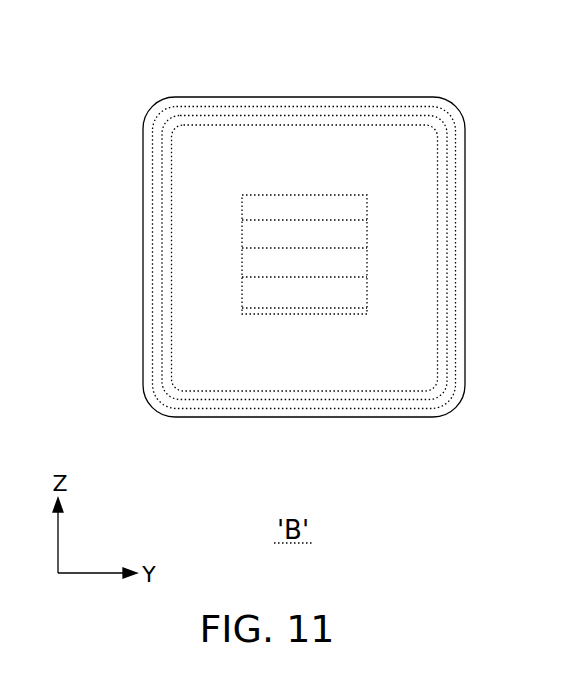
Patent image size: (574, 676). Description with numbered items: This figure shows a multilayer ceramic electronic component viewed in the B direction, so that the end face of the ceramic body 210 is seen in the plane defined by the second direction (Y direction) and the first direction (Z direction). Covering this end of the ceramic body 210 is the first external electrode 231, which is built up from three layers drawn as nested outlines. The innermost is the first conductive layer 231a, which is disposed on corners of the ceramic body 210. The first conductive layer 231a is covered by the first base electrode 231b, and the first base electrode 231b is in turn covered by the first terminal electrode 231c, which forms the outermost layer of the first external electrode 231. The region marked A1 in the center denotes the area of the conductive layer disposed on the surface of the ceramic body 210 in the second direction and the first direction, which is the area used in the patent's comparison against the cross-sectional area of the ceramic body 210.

The ceramic body 210 is at (383, 120).
The first external electrode 231 is at (304, 204).
The first conductive layer 231a is at (211, 120).
The first base electrode 231b is at (272, 114).
The first terminal electrode 231c is at (155, 38).
The area of the first conductive layer A1 is at (296, 351).